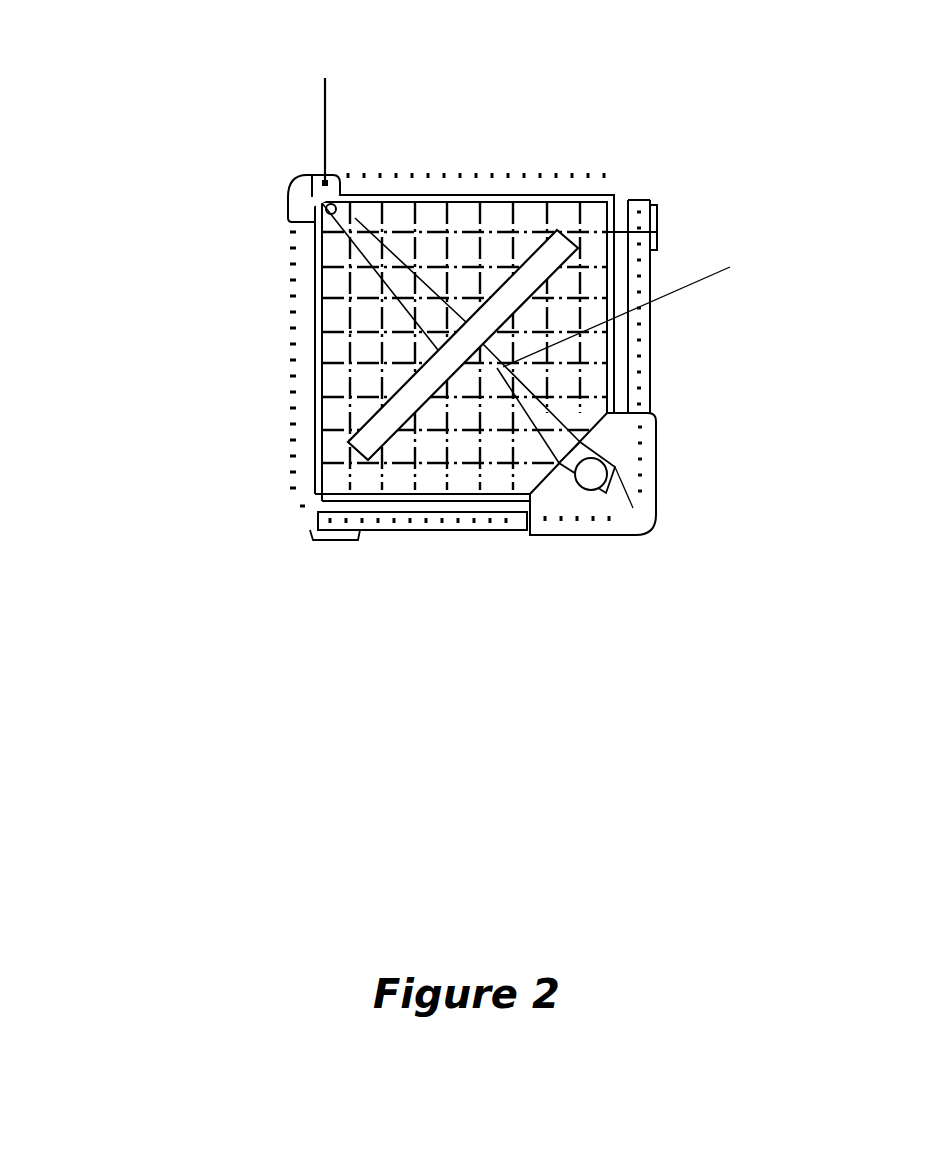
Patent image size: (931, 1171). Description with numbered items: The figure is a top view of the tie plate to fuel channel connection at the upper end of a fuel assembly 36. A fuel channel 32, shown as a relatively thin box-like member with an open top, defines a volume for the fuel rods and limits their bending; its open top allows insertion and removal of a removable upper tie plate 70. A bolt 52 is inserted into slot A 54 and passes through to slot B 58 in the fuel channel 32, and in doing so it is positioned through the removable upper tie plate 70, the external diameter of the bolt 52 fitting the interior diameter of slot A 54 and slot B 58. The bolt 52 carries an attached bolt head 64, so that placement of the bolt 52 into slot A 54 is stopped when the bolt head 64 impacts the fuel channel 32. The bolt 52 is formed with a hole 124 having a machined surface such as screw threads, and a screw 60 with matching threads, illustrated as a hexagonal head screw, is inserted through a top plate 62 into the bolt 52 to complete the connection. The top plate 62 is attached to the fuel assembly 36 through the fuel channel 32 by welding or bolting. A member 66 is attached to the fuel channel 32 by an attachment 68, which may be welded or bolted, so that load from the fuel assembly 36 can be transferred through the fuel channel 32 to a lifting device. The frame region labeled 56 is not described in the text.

The fuel channel 32 is at (445, 537).
The fuel assembly 36 is at (128, 600).
The bolt 52 is at (300, 183).
The slot A 54 is at (333, 96).
The frame 56 is at (313, 392).
The slot B 58 is at (643, 510).
The screw 60 is at (610, 470).
The top plate 62 is at (565, 543).
The bolt head 64 is at (287, 202).
The member 66 is at (598, 190).
The attachment 68 is at (657, 230).
The removable upper tie plate 70 is at (487, 197).
The hole 124 is at (607, 468).